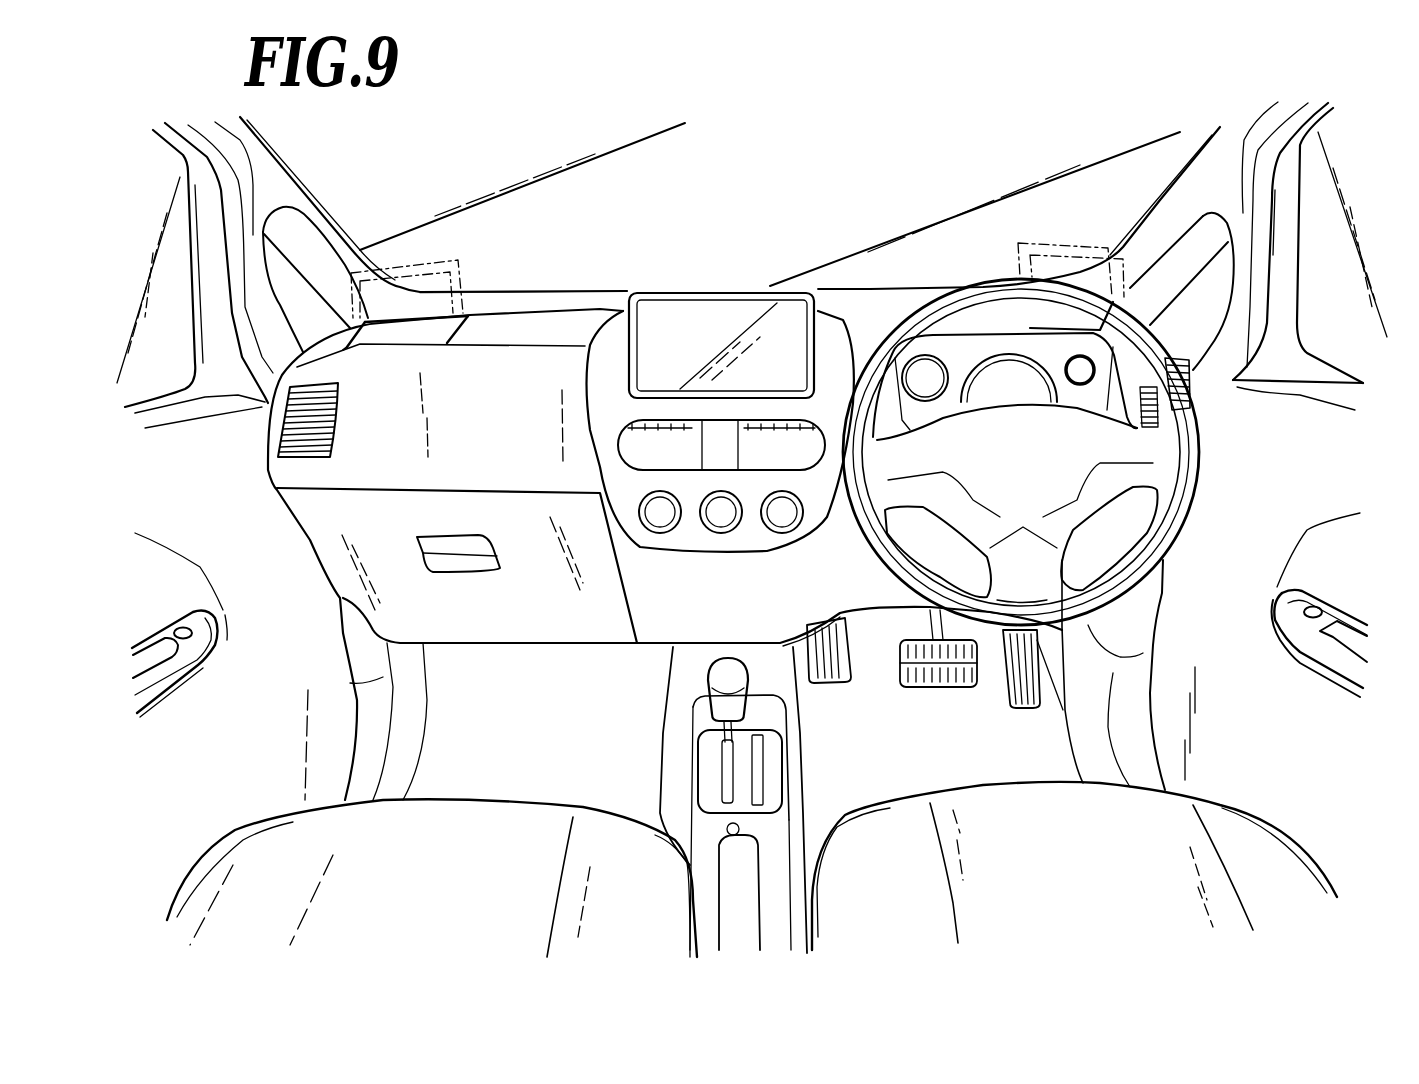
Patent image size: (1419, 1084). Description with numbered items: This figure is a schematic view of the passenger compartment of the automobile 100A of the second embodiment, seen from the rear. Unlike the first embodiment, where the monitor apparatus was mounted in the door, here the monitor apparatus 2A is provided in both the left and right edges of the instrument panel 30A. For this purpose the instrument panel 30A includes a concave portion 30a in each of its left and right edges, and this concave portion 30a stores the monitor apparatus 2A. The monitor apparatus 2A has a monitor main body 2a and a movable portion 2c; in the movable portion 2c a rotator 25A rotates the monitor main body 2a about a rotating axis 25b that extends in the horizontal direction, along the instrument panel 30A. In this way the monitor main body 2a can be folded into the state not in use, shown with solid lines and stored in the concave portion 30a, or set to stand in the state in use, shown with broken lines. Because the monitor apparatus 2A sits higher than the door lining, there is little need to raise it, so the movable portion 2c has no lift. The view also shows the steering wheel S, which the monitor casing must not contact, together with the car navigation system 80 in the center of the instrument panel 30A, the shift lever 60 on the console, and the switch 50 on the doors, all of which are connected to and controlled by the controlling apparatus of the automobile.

The automobile 100A is at (828, 150).
The monitor apparatus 2A is at (437, 258).
The monitor main body 2a is at (345, 325).
The movable portion 2c is at (469, 313).
The instrument panel 30A is at (523, 318).
The concave portion 30a is at (389, 349).
The rotator 25A is at (413, 322).
The rotating axis 25b is at (467, 320).
The car navigation system 80 is at (696, 320).
The steering wheel S is at (873, 533).
The switch 50 is at (180, 626).
The shift lever 60 is at (722, 673).